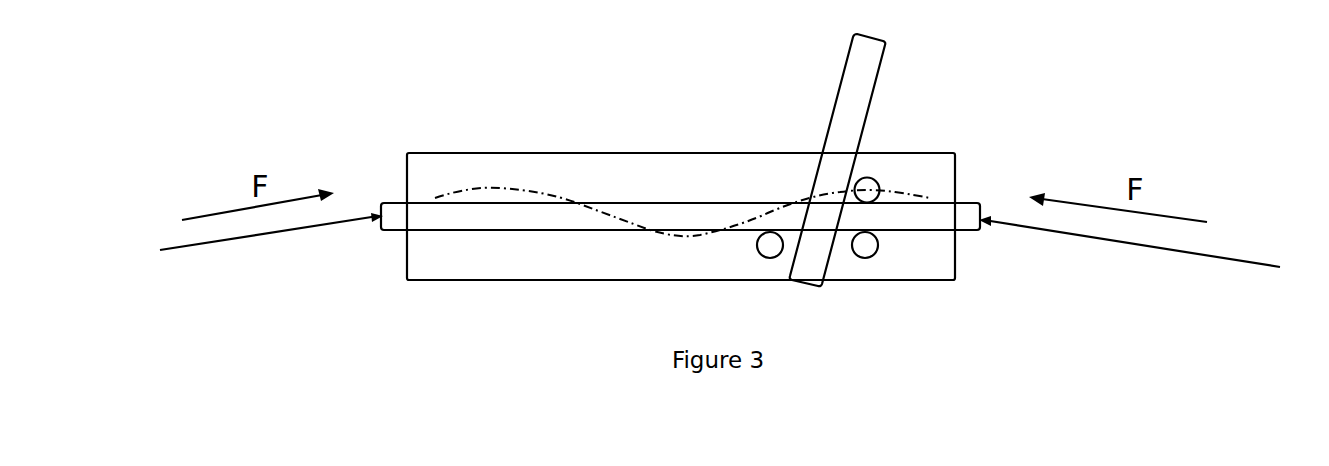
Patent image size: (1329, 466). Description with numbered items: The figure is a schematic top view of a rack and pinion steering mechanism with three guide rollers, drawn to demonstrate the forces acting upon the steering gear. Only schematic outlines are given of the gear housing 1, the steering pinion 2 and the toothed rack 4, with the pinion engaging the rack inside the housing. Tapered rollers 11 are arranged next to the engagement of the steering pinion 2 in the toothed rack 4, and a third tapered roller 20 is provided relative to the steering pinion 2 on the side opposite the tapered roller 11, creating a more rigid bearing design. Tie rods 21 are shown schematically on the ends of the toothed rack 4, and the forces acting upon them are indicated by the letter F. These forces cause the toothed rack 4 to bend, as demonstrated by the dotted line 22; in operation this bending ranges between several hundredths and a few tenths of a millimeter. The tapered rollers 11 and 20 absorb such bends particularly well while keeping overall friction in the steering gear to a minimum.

The gear housing 1 is at (617, 280).
The steering pinion 2 is at (865, 63).
The toothed rack 4 is at (398, 218).
The tapered rollers 11 is at (867, 190).
The third tapered roller 20 is at (772, 243).
The tie rods 21 is at (248, 237).
The dotted line 22 is at (500, 188).